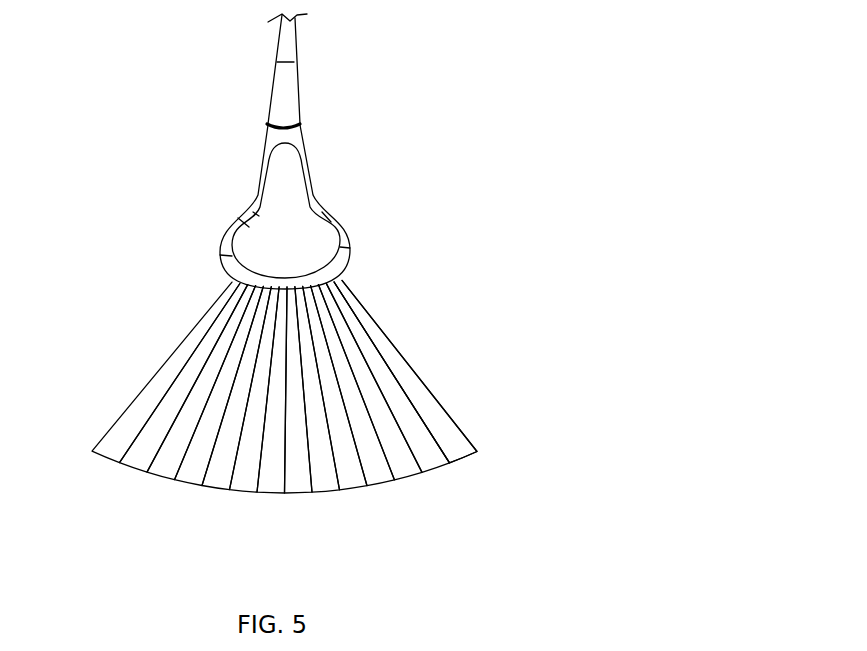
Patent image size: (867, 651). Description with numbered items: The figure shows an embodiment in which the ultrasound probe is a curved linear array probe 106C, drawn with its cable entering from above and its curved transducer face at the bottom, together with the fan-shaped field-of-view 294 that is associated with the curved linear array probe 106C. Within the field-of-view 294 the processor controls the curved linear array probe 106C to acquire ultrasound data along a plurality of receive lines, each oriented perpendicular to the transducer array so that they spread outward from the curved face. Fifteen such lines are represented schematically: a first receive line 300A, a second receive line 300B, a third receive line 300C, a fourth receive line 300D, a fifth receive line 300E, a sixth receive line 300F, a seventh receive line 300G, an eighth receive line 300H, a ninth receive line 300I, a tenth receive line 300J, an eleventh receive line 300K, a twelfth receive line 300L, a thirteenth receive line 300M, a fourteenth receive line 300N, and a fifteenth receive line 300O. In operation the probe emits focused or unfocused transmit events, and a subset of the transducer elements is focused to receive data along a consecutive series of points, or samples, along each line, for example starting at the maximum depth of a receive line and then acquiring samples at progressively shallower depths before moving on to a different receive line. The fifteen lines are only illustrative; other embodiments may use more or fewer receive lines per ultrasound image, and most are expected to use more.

The curved linear array probe 106C is at (307, 133).
The field-of-view 294 is at (367, 303).
The first receive line 300A is at (137, 393).
The second receive line 300B is at (127, 433).
The third receive line 300C is at (153, 450).
The fourth receive line 300D is at (167, 465).
The fifth receive line 300E is at (185, 465).
The sixth receive line 300F is at (243, 468).
The seventh receive line 300G is at (262, 480).
The eighth receive line 300H is at (275, 473).
The ninth receive line 300I is at (305, 470).
The tenth receive line 300J is at (340, 473).
The eleventh receive line 300K is at (390, 462).
The twelfth receive line 300L is at (400, 463).
The thirteenth receive line 300M is at (400, 422).
The fourteenth receive line 300N is at (400, 370).
The fifteenth receive line 300O is at (392, 335).